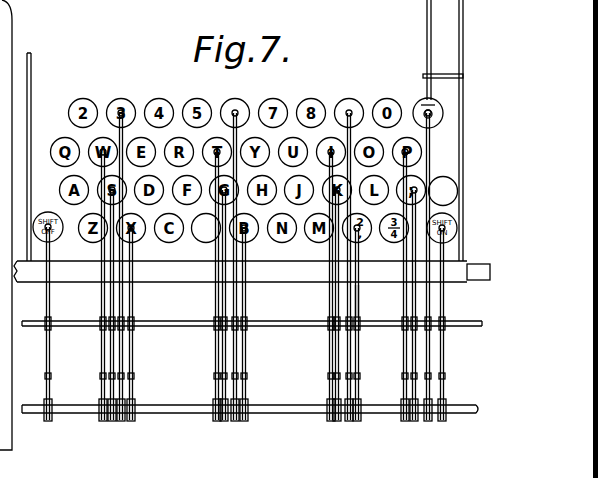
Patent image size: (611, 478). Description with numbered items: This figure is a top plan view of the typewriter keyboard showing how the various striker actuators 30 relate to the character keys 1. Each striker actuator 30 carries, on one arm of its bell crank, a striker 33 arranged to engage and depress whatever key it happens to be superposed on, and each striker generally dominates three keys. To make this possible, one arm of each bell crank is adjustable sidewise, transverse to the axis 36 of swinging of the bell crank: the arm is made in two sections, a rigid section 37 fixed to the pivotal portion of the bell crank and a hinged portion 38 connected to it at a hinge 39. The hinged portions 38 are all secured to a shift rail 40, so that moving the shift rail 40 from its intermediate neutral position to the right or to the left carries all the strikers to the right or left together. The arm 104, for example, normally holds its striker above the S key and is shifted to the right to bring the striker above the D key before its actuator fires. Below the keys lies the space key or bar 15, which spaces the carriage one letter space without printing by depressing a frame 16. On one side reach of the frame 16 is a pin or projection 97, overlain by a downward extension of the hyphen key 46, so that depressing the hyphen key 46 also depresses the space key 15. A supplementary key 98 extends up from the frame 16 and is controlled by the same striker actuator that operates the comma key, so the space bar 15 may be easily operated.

The character keys 1 is at (232, 102).
The space key or bar 15 is at (252, 272).
The frame 16 is at (28, 218).
The striker actuators 30 is at (236, 421).
The striker 33 is at (343, 106).
The axis of swinging of the bell crank 36 is at (291, 413).
The rigid section of bell crank arm 37 is at (400, 392).
The hinged portion of bell crank arm 38 is at (400, 304).
The hinge 39 is at (129, 377).
The shift rail 40 is at (316, 323).
The hyphen key 46 is at (421, 104).
The pin or projection 97 is at (457, 81).
The supplementary key 98 is at (457, 191).
The arm 104 is at (116, 303).